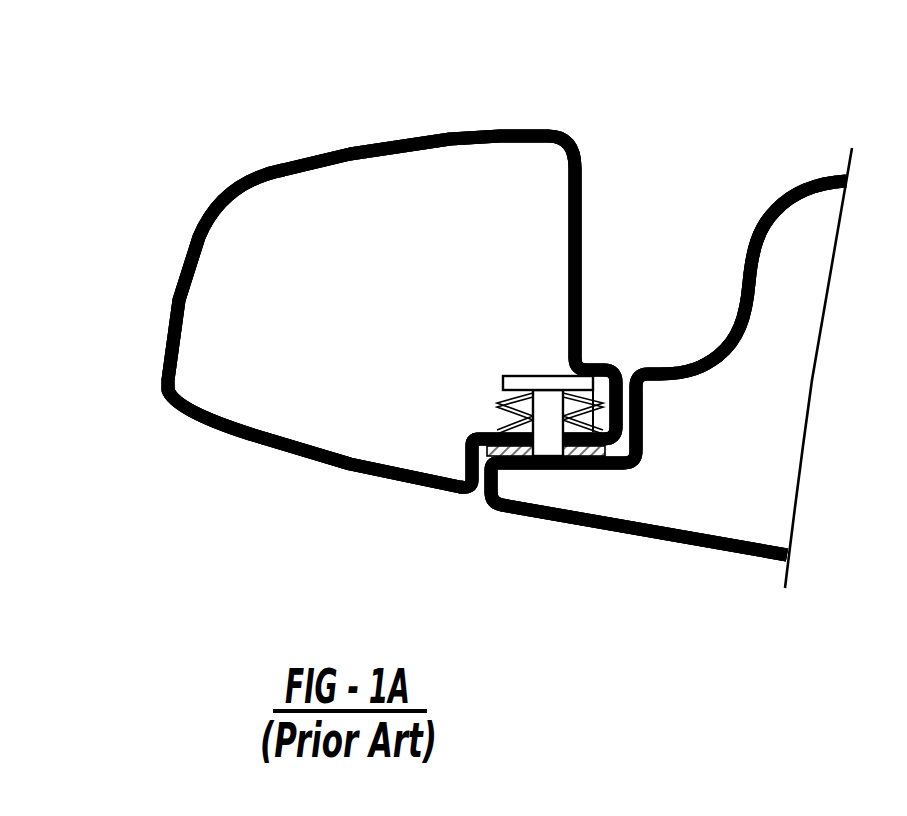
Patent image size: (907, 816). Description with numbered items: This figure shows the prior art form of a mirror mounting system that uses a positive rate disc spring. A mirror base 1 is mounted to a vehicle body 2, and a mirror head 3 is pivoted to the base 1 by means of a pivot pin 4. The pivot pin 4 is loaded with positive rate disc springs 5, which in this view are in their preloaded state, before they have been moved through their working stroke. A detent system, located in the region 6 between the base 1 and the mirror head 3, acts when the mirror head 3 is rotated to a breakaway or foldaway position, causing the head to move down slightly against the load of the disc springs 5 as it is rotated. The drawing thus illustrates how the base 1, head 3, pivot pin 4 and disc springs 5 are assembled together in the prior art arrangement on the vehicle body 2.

The mirror base 1 is at (758, 251).
The vehicle body 2 is at (839, 390).
The mirror head 3 is at (293, 167).
The pivot pin 4 is at (547, 410).
The positive rate disc springs 5 is at (498, 400).
The region 6 is at (508, 449).